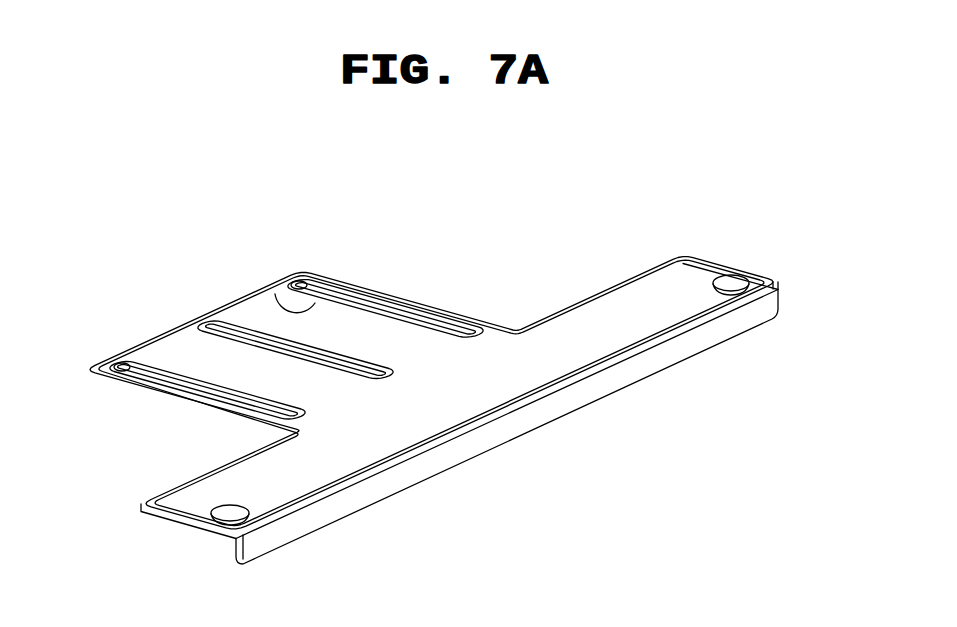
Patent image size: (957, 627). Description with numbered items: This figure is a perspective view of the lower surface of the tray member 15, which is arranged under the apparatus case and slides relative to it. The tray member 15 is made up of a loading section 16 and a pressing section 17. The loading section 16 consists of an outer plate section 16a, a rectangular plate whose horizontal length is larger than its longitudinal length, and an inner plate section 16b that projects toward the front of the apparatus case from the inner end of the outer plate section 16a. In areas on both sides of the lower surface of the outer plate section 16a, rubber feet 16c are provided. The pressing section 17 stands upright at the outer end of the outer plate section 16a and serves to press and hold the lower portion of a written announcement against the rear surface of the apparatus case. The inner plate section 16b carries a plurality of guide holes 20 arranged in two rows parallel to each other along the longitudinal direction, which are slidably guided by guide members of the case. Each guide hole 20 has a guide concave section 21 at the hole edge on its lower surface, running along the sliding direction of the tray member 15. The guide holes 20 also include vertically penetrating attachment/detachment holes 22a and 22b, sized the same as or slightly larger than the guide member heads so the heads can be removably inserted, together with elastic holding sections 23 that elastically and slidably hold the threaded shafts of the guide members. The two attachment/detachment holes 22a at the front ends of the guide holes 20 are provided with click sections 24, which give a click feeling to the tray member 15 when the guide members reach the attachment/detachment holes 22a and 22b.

The tray member 15 is at (687, 231).
The loading section 16 is at (522, 328).
The outer plate section 16a is at (582, 332).
The inner plate section 16b is at (370, 340).
The rubber feet 16c is at (737, 281).
The pressing section 17 is at (535, 423).
The guide holes 20 is at (457, 318).
The guide concave section 21 is at (443, 313).
The attachment/detachment hole 22a is at (300, 281).
The attachment/detachment hole 22b is at (403, 313).
The elastic holding section 23 is at (427, 313).
The click section 24 is at (310, 277).